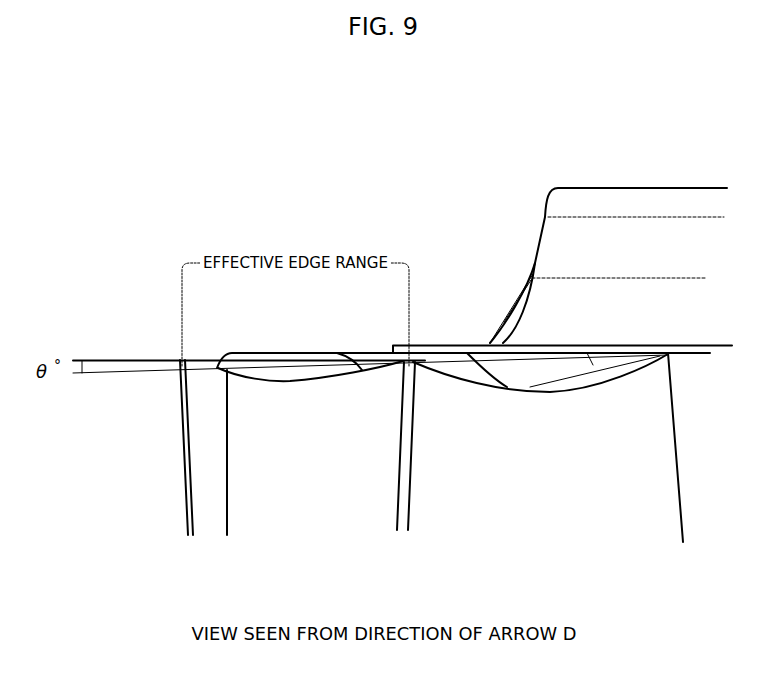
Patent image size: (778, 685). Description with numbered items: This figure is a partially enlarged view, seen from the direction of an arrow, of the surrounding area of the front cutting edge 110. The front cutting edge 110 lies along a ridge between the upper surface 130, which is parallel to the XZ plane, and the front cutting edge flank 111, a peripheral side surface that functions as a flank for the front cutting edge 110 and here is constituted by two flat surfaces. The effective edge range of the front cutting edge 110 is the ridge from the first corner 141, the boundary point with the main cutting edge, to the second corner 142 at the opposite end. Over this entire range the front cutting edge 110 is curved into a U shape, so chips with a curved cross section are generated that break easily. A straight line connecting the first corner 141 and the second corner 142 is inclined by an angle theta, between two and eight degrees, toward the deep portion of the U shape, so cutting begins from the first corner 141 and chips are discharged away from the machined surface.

The front cutting edge 110 is at (305, 382).
The front cutting edge flank 111 is at (355, 500).
The upper surface 130 is at (268, 352).
The first corner 141 is at (412, 345).
The second corner 142 is at (183, 368).